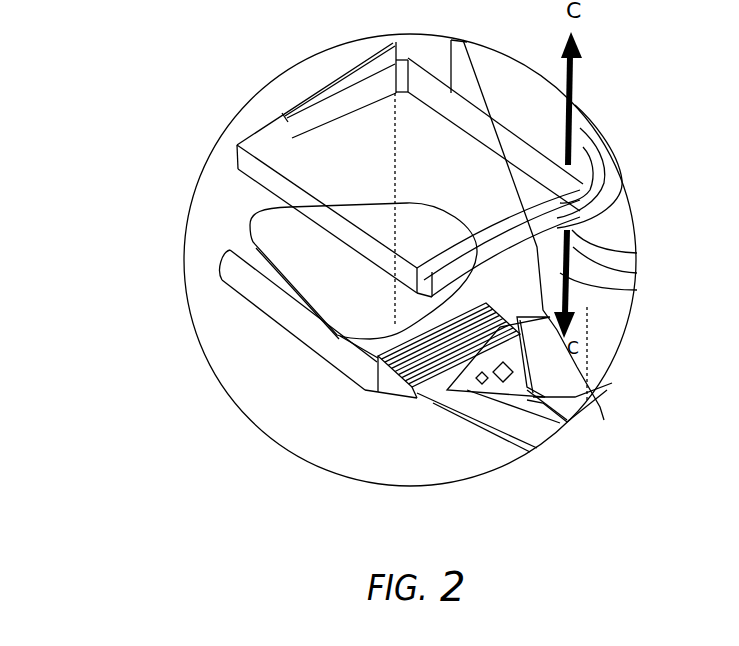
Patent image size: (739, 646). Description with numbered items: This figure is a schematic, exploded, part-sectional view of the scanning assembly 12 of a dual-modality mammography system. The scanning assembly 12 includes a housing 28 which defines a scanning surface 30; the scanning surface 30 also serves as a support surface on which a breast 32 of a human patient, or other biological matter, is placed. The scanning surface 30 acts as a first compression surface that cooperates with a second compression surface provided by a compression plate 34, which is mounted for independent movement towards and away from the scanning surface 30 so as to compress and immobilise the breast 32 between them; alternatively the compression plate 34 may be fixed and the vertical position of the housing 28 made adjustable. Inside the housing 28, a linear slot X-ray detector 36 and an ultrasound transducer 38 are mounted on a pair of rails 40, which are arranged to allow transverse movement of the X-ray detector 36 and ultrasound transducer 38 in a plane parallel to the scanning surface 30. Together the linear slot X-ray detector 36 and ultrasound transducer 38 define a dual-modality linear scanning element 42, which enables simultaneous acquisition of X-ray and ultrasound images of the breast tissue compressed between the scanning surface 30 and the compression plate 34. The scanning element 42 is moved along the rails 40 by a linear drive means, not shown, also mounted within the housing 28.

The scanning assembly 12 is at (189, 295).
The housing 28 is at (226, 262).
The scanning surface 30 is at (539, 248).
The breast 32 is at (270, 228).
The compression plate 34 is at (300, 150).
The linear slot X-ray detector 36 is at (380, 387).
The ultrasound transducer 38 is at (415, 398).
The rails 40 is at (527, 370).
The dual-modality linear scanning element 42 is at (384, 402).